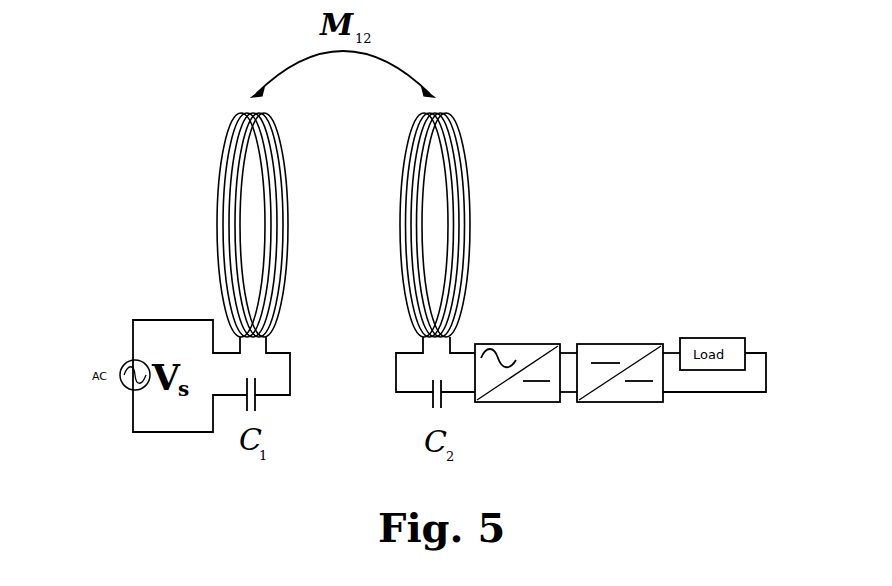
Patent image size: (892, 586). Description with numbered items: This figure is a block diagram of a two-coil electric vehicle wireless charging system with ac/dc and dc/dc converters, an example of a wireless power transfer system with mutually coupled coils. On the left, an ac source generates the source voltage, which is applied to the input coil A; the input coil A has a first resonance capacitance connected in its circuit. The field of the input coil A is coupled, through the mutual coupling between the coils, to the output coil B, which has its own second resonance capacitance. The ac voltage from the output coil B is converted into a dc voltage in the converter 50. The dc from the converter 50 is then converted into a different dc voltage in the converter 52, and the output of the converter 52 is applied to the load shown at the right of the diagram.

The input coil A is at (208, 193).
The output coil B is at (478, 195).
The converter 50 is at (523, 347).
The converter 52 is at (630, 347).